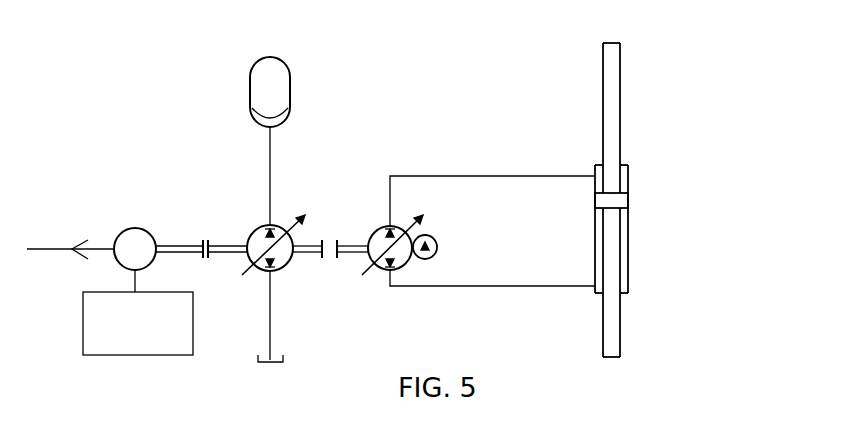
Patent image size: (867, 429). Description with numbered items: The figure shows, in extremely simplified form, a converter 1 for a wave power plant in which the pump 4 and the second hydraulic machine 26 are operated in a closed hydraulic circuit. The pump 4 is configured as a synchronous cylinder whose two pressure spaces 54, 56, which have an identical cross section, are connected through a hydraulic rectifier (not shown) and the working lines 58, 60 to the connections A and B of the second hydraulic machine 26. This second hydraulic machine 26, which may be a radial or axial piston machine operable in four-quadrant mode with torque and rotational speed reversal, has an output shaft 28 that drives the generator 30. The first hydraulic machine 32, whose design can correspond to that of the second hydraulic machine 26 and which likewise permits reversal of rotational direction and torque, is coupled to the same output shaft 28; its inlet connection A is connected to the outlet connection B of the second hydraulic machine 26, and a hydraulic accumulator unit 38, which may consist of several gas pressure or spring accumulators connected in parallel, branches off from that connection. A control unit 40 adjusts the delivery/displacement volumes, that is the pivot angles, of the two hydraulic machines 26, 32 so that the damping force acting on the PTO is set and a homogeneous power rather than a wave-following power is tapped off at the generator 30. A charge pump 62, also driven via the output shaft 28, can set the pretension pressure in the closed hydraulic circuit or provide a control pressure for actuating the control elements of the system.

The hydraulic actuation system 1 is at (430, 126).
The pump 4 is at (648, 200).
The second hydraulic machine 26 is at (371, 228).
The output shaft 28 is at (351, 258).
The generator 30 is at (135, 228).
The first hydraulic machine 32 is at (257, 242).
The hydraulic accumulator unit 38 is at (268, 82).
The control unit 40 is at (193, 323).
The pressure space 54 is at (624, 183).
The pressure space 56 is at (624, 262).
The working line 58 is at (487, 175).
The working line 60 is at (498, 287).
The charge pump 62 is at (440, 241).